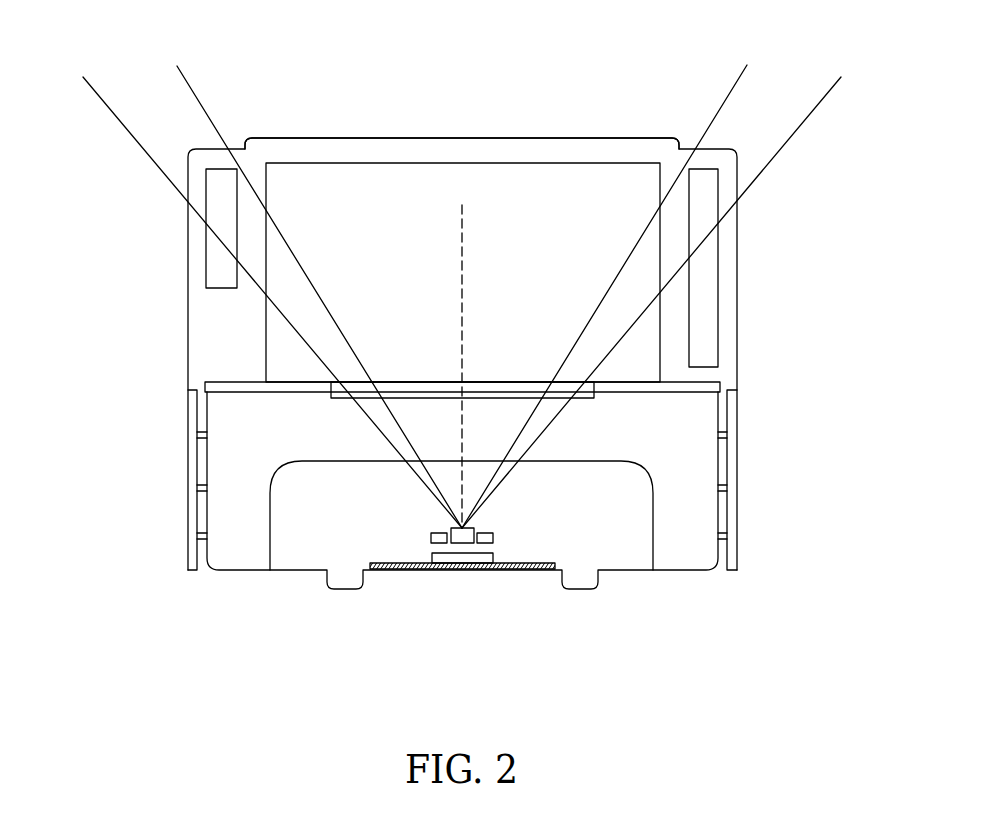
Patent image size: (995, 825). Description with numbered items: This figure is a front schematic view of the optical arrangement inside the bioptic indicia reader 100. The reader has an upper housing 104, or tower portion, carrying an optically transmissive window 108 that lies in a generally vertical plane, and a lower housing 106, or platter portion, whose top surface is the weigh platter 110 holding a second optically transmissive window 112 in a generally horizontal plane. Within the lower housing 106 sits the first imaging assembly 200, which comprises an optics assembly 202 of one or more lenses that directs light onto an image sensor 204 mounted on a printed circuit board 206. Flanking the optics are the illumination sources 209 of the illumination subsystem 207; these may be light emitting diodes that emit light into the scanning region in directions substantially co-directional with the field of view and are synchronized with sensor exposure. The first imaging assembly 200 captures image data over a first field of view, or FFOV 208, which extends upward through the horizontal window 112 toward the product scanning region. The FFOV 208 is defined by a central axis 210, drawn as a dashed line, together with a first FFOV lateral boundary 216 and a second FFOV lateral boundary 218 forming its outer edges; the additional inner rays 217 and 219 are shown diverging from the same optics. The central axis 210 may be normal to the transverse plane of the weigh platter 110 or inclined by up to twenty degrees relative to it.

The bioptic indicia reader 100 is at (124, 325).
The upper housing 104 is at (462, 137).
The lower housing 106 is at (697, 455).
The optically transmissive window 108 is at (566, 240).
The weigh platter 110 is at (232, 382).
The optically transmissive window 112 is at (345, 399).
The first imaging assembly 200 is at (636, 543).
The optics assembly 202 is at (475, 525).
The image sensor 204 is at (493, 558).
The printed circuit board 206 is at (372, 563).
The illumination subsystem 207 is at (404, 534).
The first field of view (FFOV) 208 is at (462, 302).
The illumination sources 209 is at (433, 530).
The FFOV central axis 210 is at (462, 288).
The first FFOV lateral boundary 216 is at (177, 190).
The left inner ray 217 is at (207, 112).
The second FFOV lateral boundary 218 is at (748, 190).
The right inner ray 219 is at (723, 105).